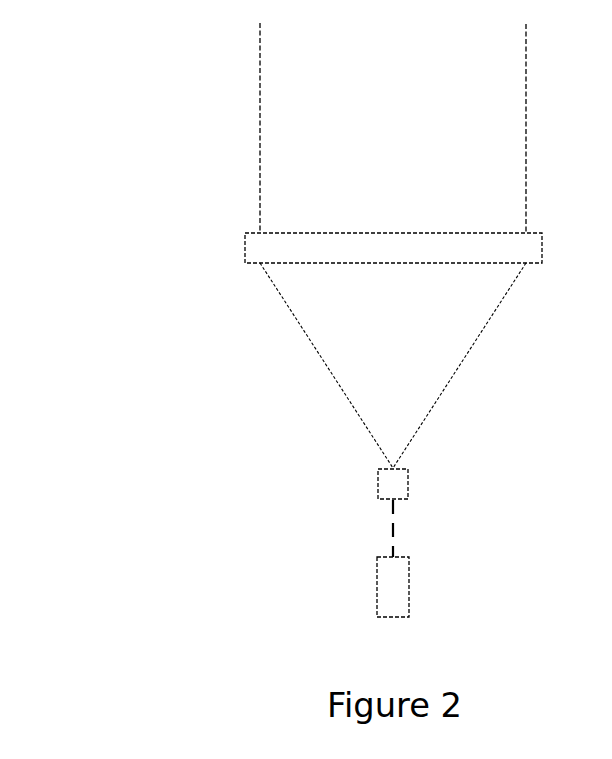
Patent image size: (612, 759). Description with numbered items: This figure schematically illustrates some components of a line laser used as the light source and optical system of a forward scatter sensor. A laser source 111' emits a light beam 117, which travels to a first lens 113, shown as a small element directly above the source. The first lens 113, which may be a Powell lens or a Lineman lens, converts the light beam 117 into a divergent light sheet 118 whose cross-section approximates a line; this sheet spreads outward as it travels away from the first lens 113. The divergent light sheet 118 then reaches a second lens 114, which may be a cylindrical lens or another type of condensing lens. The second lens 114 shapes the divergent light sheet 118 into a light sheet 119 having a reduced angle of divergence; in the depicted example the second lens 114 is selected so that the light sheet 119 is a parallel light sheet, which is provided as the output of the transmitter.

The light sheet 119 is at (413, 132).
The second lens 114 is at (245, 252).
The divergent light sheet 118 is at (414, 344).
The first lens 113 is at (378, 488).
The light beam 117 is at (397, 523).
The laser source 111' is at (328, 587).